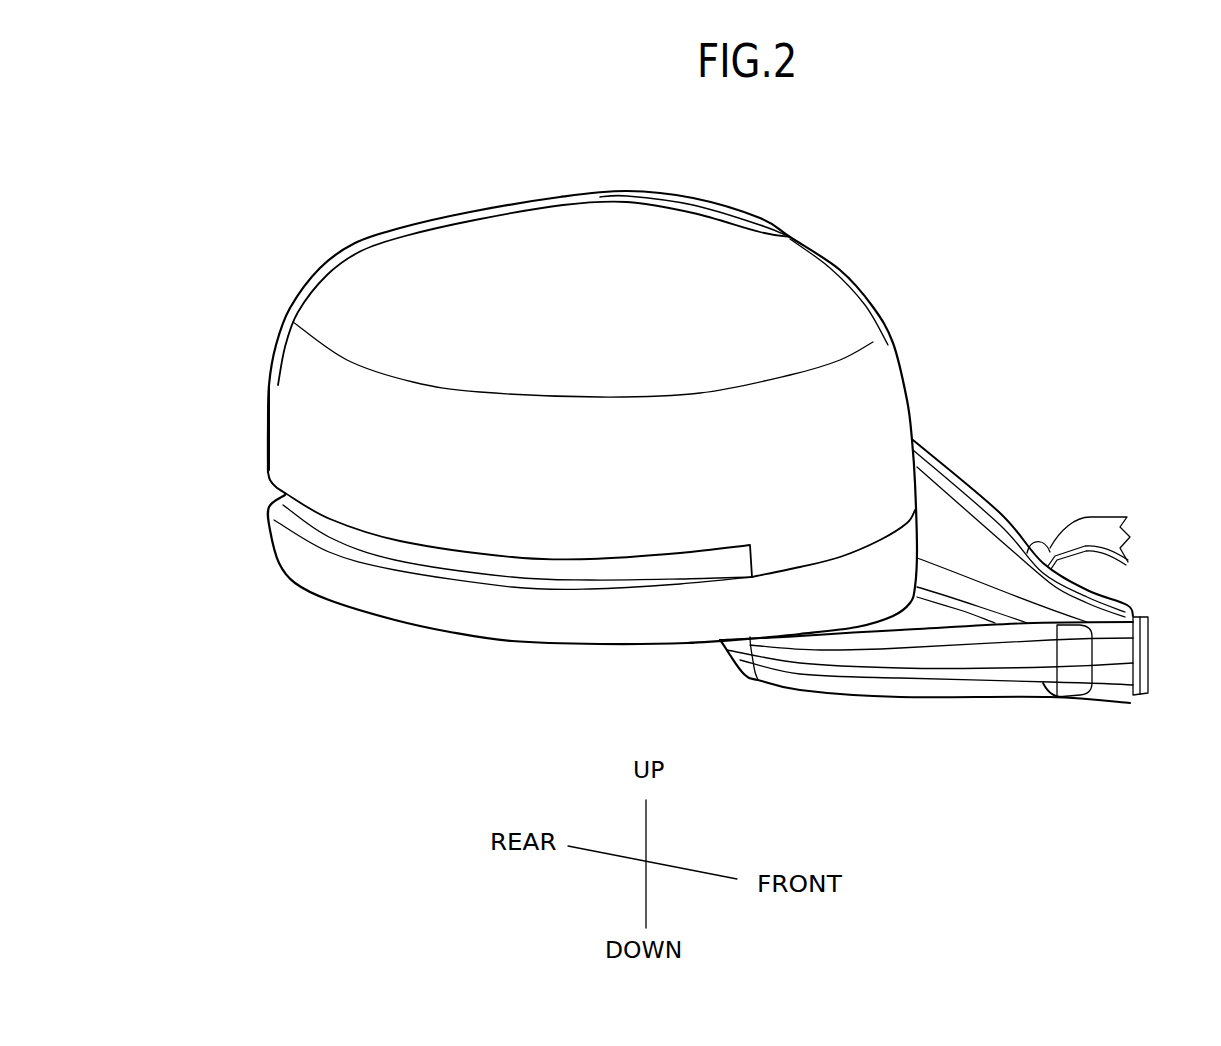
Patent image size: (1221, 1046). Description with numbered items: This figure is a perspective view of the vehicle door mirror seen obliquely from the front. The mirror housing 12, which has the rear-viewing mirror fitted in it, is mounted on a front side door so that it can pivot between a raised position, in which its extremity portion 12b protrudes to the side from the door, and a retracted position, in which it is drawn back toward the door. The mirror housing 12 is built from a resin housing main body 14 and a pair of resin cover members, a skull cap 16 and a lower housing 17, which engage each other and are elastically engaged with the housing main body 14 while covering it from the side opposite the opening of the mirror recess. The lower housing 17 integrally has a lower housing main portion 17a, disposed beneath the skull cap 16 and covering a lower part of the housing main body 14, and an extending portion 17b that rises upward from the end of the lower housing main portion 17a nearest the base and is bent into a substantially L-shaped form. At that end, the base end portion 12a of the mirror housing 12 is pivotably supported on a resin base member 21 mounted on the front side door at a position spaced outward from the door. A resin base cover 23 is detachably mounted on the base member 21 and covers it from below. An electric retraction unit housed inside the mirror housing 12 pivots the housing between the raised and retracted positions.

The mirror housing 12 is at (517, 650).
The base end portion 12a is at (880, 510).
The extremity portion 12b is at (298, 450).
The housing main body 14 is at (473, 212).
The skull cap 16 is at (609, 235).
The lower housing 17 is at (689, 655).
The lower housing main portion 17a is at (667, 607).
The extending portion 17b is at (763, 217).
The base member 21 is at (933, 620).
The base cover 23 is at (940, 698).